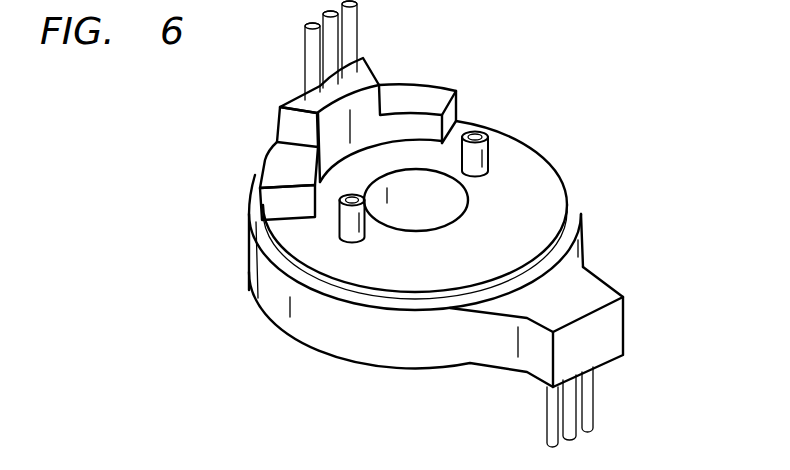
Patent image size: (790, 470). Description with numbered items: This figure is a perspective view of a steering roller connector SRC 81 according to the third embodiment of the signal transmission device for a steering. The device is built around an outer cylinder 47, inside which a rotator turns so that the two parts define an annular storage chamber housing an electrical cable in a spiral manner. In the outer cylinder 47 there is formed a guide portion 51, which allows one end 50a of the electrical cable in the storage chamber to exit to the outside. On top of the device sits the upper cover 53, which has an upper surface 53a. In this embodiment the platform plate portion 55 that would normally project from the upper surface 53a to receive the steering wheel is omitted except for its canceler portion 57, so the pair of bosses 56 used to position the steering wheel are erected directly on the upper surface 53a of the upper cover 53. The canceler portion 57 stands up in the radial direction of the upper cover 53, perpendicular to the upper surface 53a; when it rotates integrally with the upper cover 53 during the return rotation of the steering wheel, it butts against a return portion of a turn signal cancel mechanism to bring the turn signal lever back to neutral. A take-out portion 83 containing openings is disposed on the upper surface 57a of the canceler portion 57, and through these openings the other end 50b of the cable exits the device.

The outer cylinder 47 is at (260, 298).
The one end of the electrical cable 50a is at (592, 405).
The other end of the cable 50b is at (352, 38).
The guide portion 51 is at (622, 325).
The upper cover 53 is at (400, 309).
The upper surface 53a is at (557, 180).
The platform plate portion 55 is at (408, 142).
The bosses 56 is at (485, 150).
The canceler portion 57 is at (288, 213).
The upper surface of the canceler portion 57a is at (272, 168).
The SRC 81 is at (587, 128).
The take-out portion 83 is at (285, 122).